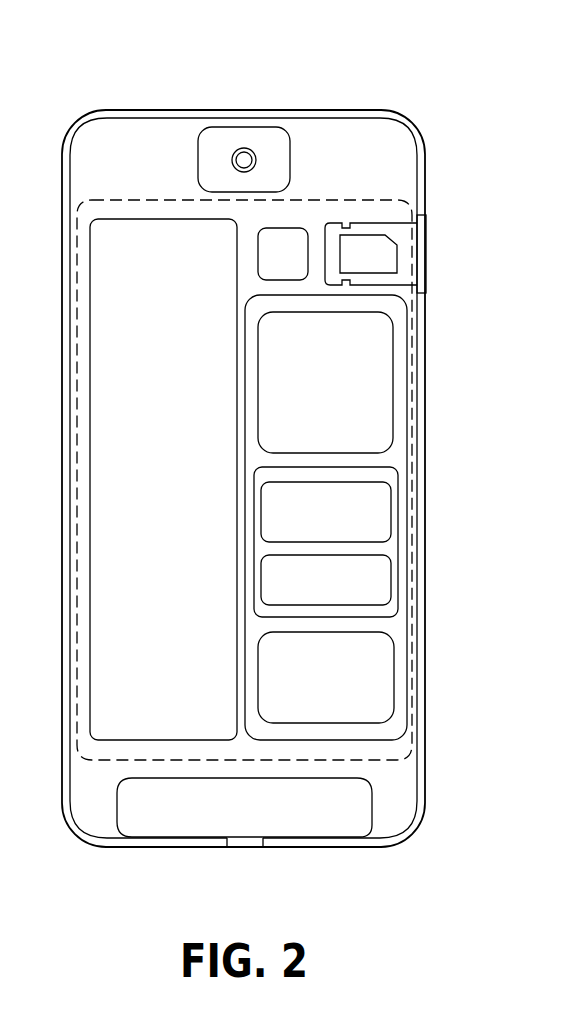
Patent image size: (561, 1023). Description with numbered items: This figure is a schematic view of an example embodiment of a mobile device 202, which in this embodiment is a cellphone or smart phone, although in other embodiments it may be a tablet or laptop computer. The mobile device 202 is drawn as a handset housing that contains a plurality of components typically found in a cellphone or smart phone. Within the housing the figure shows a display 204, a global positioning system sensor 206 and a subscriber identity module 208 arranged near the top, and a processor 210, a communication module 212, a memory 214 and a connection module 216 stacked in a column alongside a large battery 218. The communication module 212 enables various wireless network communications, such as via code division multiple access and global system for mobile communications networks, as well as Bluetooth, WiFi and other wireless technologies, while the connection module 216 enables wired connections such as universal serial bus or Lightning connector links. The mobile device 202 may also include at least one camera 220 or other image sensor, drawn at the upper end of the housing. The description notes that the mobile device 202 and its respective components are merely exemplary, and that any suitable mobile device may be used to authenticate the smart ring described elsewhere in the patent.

The mobile device 202 is at (150, 108).
The display 204 is at (220, 762).
The global positioning system (GPS) sensor 206 is at (290, 228).
The subscriber identity module (SIM) 208 is at (367, 223).
The processor 210 is at (350, 397).
The communication module 212 is at (303, 527).
The memory 214 is at (303, 593).
The connection module 216 is at (303, 688).
The battery 218 is at (139, 489).
The camera 220 is at (198, 149).